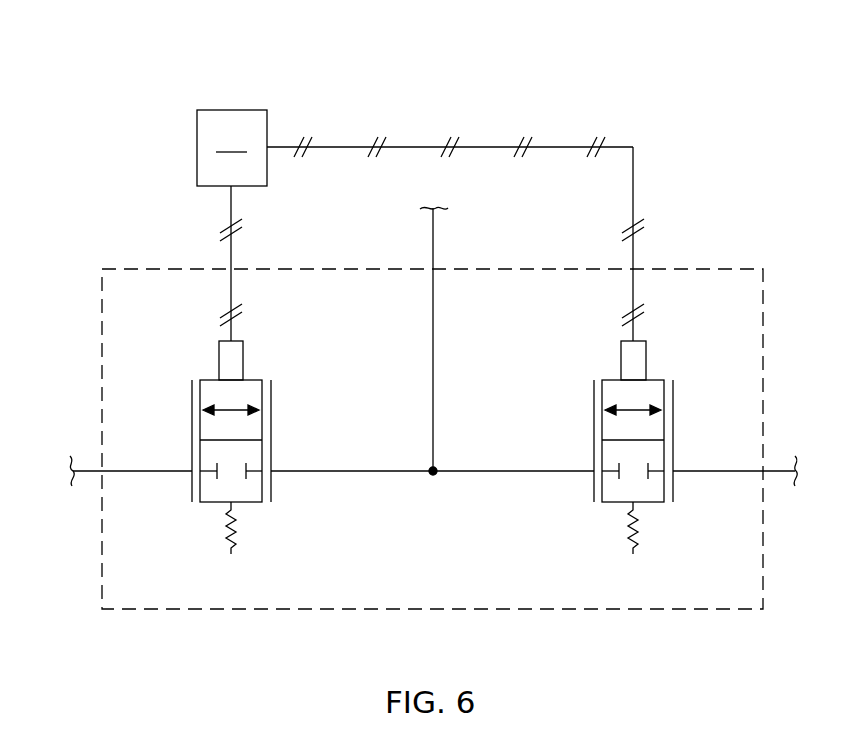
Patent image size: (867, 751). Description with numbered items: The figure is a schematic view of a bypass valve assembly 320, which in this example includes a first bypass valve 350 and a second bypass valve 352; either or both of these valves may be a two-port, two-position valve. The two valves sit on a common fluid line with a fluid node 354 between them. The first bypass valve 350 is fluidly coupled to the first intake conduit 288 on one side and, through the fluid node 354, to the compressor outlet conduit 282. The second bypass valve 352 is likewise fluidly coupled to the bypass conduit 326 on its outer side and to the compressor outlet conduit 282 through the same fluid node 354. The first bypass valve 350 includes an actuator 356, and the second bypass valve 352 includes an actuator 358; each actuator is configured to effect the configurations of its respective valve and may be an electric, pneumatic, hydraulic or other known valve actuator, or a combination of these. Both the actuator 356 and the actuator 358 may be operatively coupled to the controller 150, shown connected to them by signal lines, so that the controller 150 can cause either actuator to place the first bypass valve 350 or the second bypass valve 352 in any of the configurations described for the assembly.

The controller 150 is at (232, 148).
The compressor outlet conduit 282 is at (434, 240).
The first intake conduit 288 is at (150, 473).
The bypass valve assembly 320 is at (528, 617).
The bypass conduit 326 is at (717, 473).
The first bypass valve 350 is at (183, 441).
The second bypass valve 352 is at (687, 441).
The fluid node 354 is at (431, 475).
The actuator 356 is at (244, 359).
The actuator 358 is at (620, 360).